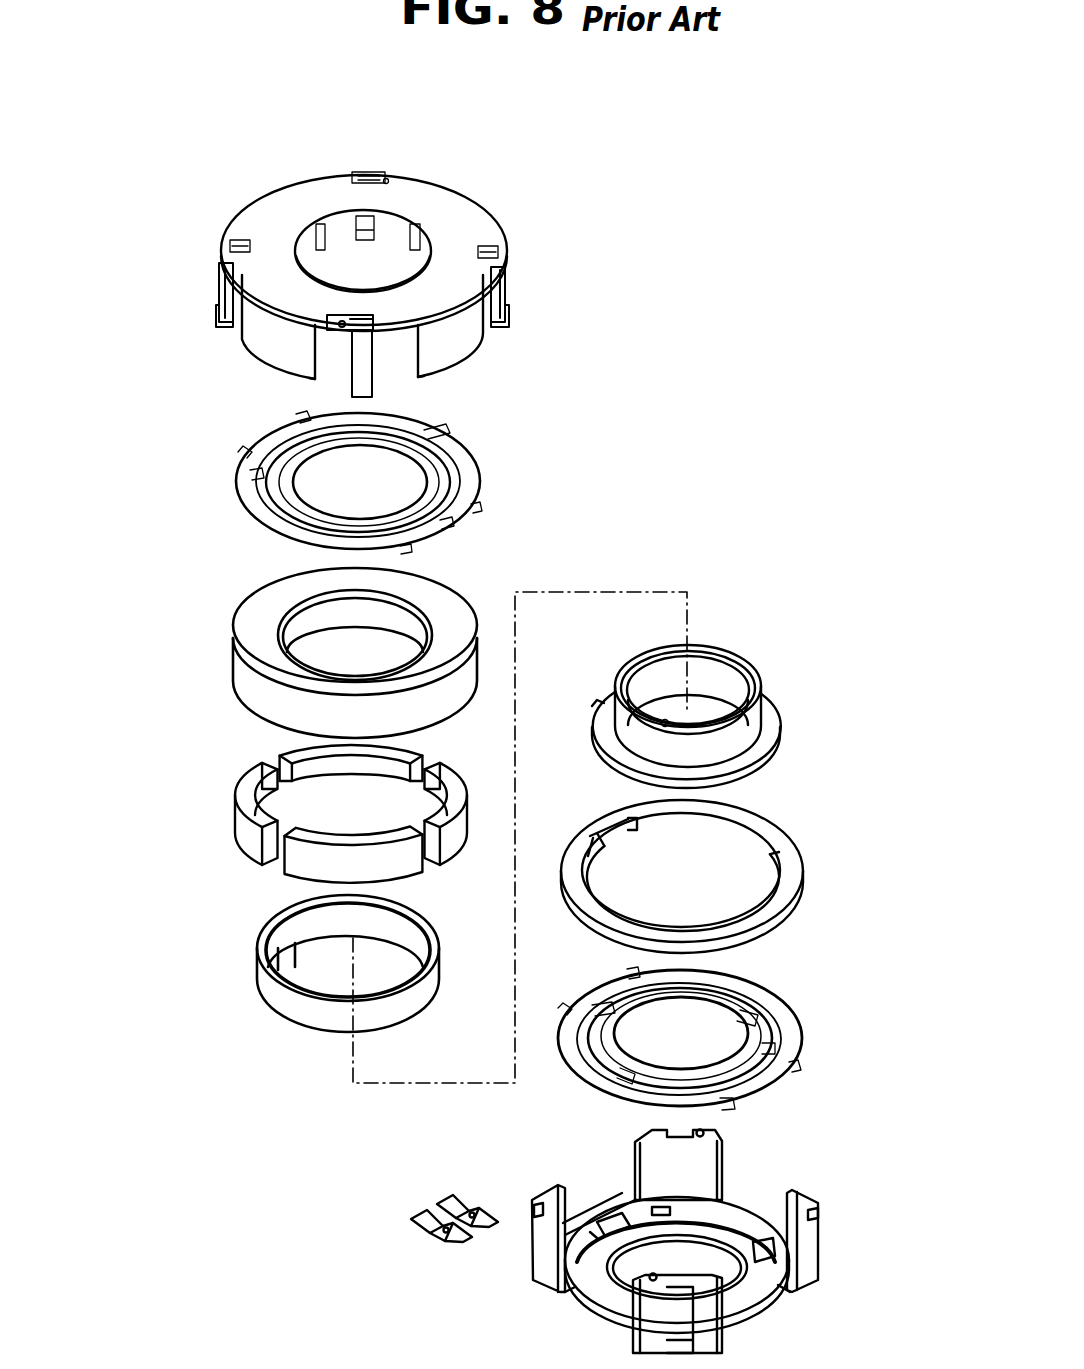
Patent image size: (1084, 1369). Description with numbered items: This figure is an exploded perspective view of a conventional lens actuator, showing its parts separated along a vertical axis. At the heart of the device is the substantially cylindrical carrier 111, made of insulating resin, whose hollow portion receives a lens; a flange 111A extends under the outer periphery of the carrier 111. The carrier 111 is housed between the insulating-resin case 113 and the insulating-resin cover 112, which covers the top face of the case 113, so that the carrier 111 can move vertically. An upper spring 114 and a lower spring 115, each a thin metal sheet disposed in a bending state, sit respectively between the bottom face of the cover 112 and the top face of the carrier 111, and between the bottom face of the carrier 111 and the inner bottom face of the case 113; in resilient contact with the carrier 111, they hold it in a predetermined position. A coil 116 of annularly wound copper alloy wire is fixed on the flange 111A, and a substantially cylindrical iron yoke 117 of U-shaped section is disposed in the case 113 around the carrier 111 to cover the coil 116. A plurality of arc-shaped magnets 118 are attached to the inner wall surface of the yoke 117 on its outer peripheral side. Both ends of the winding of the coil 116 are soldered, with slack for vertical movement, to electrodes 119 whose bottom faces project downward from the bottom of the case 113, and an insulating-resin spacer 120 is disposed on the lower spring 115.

The carrier 111 is at (765, 681).
The flange 111A is at (773, 730).
The cover 112 is at (243, 215).
The case 113 is at (790, 1318).
The upper spring 114 is at (262, 440).
The lower spring 115 is at (800, 1023).
The coil 116 is at (267, 1002).
The yoke 117 is at (245, 617).
The magnets 118 is at (290, 877).
The electrodes 119 is at (445, 1193).
The spacer 120 is at (805, 857).